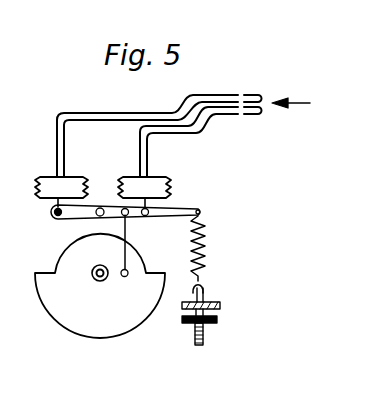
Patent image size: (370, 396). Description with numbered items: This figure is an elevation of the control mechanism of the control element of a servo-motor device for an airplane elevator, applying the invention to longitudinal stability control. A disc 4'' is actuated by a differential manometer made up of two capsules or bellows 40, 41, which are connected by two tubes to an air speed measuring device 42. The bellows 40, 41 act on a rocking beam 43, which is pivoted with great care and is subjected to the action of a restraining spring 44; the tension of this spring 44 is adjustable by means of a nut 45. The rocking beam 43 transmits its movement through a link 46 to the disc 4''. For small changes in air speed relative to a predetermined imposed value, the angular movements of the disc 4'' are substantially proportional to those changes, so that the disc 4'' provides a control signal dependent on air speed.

The capsule or bellows 40 is at (61, 192).
The capsule or bellows 41 is at (144, 192).
The air speed measuring device 42 is at (183, 122).
The rocking beam 43 is at (196, 216).
The restraining spring 44 is at (205, 258).
The nut 45 is at (217, 321).
The link 46 is at (136, 246).
The disc 4'' is at (100, 286).